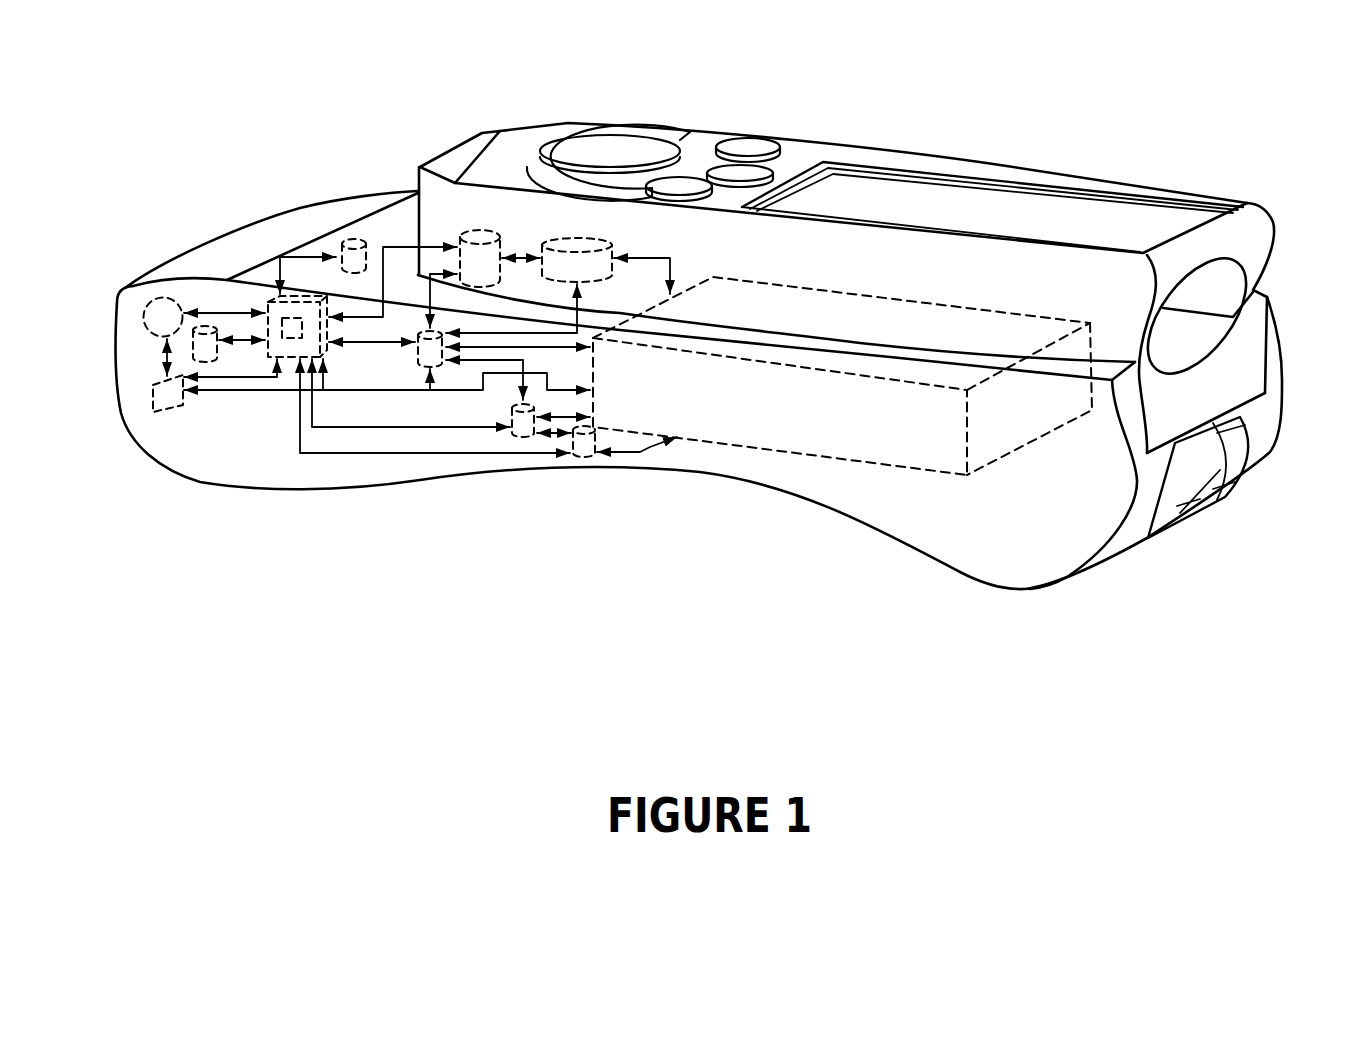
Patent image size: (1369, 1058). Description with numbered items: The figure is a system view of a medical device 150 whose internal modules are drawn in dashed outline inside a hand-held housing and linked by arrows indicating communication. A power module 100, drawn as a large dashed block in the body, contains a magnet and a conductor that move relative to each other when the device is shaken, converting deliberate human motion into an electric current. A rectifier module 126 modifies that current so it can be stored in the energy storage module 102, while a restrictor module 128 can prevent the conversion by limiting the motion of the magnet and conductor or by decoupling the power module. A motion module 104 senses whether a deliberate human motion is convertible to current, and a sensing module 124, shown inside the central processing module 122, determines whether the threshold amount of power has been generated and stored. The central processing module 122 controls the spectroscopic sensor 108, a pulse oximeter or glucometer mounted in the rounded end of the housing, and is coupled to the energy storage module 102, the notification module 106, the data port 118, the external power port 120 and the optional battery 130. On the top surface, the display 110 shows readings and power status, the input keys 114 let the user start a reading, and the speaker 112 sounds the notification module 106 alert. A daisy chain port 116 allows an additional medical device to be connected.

The power module 100 is at (913, 460).
The energy storage module 102 is at (440, 367).
The motion module 104 is at (350, 240).
The notification module 106 is at (470, 232).
The spectroscopic sensor 108 is at (1210, 307).
The display 110 is at (1013, 220).
The speaker 112 is at (560, 236).
The input keys 114 is at (715, 145).
The daisy chain port 116 is at (1183, 467).
The data port 118 is at (160, 297).
The external power port 120 is at (172, 402).
The central processing module 122 is at (350, 448).
The sensing module 124 is at (293, 338).
The rectifier module 126 is at (530, 437).
The restrictor module 128 is at (588, 458).
The optional battery 130 is at (207, 362).
The medical device 150 is at (1120, 750).